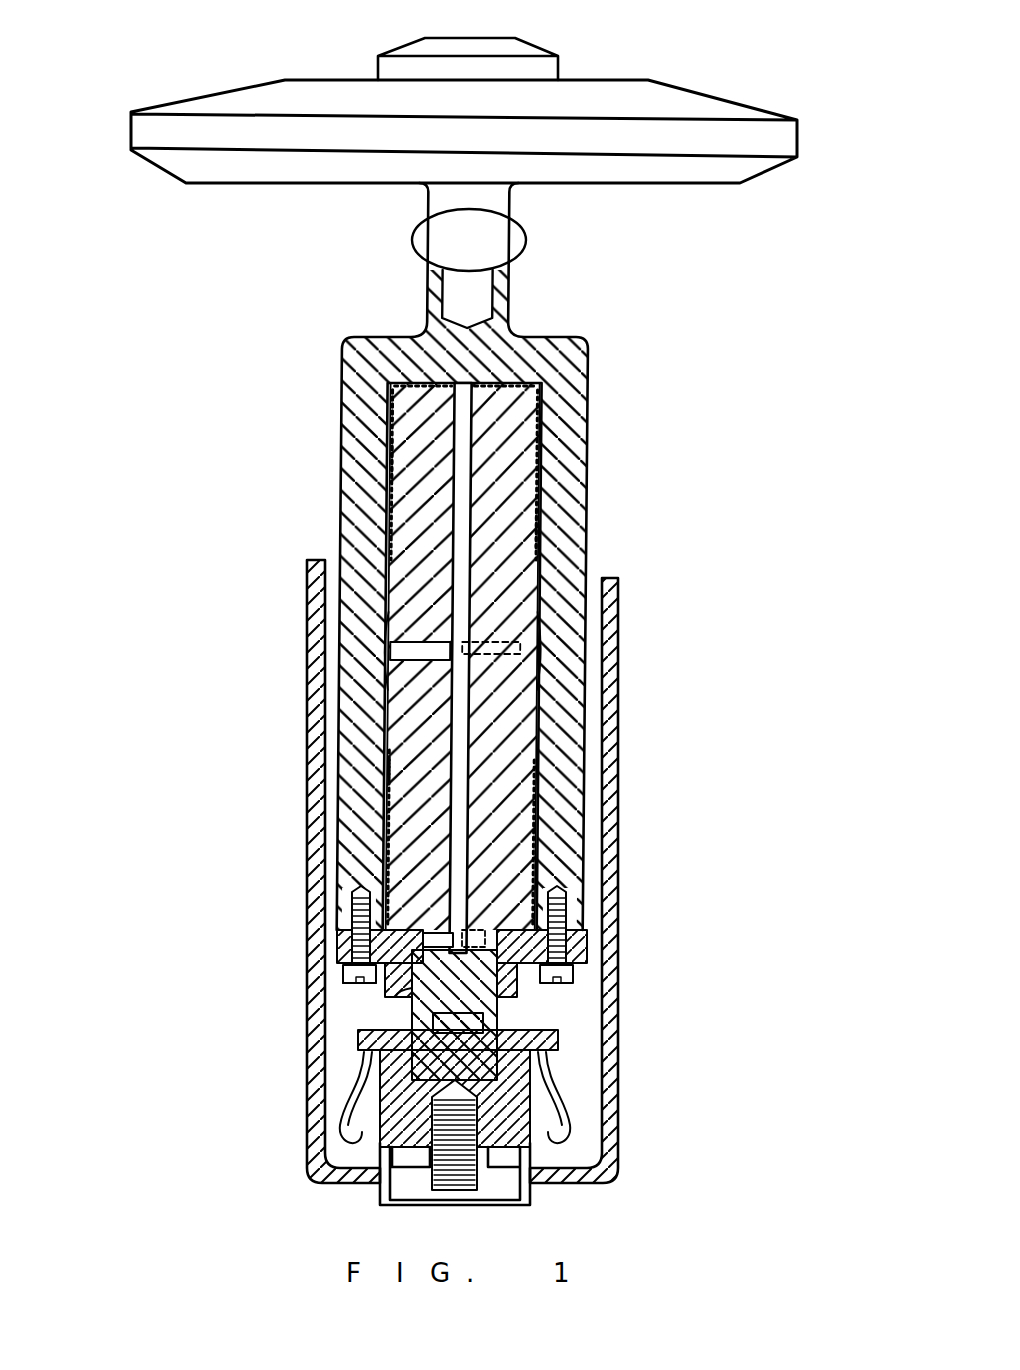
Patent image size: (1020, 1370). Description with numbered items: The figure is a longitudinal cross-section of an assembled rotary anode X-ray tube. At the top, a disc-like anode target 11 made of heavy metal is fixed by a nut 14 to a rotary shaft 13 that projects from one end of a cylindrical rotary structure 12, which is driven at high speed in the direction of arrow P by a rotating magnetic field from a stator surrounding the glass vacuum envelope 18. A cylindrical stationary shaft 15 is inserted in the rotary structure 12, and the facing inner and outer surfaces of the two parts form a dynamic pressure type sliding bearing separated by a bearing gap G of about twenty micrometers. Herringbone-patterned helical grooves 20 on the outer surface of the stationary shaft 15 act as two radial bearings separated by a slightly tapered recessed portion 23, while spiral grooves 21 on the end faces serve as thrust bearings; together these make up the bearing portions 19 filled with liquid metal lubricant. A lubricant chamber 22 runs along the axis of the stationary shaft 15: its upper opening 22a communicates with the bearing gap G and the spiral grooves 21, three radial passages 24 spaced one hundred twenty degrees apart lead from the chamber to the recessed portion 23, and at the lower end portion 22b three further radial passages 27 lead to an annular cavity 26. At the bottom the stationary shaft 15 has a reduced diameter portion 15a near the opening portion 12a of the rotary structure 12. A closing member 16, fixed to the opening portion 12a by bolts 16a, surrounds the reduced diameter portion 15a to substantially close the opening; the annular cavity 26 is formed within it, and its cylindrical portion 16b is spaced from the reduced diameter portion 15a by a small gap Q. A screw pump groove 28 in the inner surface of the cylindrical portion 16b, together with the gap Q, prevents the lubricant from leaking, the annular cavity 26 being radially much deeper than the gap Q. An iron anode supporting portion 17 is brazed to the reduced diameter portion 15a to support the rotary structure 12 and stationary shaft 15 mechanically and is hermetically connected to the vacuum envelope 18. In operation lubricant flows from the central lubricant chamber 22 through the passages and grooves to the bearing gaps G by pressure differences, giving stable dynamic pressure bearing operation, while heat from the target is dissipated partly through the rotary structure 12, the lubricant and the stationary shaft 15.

The anode target 11 is at (628, 95).
The rotary structure 12 is at (573, 385).
The opening portion 12a is at (588, 948).
The rotary shaft 13 is at (435, 247).
The nut 14 is at (397, 68).
The stationary shaft 15 is at (507, 470).
The reduced diameter portion 15a is at (490, 995).
The closing member 16 is at (587, 962).
The bolts 16a is at (343, 967).
The cylindrical portion 16b is at (520, 993).
The anode supporting portion 17 is at (493, 1120).
The vacuum envelope 18 is at (615, 1118).
The bearing portions 19 is at (542, 534).
The helical grooves 20 is at (390, 458).
The spiral grooves 21 is at (405, 396).
The lubricant chamber 22 is at (465, 577).
The upper opening 22a is at (467, 375).
The lower end portion 22b is at (485, 930).
The recessed portion 23 is at (393, 643).
The radial passages 24 is at (397, 651).
The annular cavity 26 is at (566, 905).
The radial passages 27 is at (335, 955).
The screw pump groove 28 is at (392, 990).
The arrow P is at (518, 247).
The gap Q is at (405, 1008).
The bearing gap G is at (533, 368).